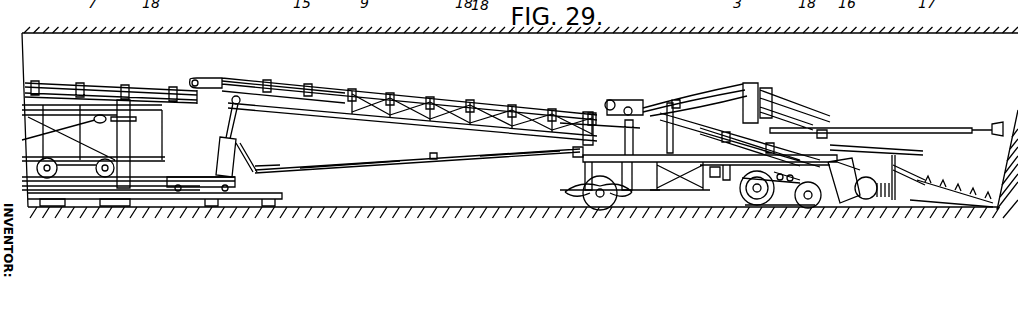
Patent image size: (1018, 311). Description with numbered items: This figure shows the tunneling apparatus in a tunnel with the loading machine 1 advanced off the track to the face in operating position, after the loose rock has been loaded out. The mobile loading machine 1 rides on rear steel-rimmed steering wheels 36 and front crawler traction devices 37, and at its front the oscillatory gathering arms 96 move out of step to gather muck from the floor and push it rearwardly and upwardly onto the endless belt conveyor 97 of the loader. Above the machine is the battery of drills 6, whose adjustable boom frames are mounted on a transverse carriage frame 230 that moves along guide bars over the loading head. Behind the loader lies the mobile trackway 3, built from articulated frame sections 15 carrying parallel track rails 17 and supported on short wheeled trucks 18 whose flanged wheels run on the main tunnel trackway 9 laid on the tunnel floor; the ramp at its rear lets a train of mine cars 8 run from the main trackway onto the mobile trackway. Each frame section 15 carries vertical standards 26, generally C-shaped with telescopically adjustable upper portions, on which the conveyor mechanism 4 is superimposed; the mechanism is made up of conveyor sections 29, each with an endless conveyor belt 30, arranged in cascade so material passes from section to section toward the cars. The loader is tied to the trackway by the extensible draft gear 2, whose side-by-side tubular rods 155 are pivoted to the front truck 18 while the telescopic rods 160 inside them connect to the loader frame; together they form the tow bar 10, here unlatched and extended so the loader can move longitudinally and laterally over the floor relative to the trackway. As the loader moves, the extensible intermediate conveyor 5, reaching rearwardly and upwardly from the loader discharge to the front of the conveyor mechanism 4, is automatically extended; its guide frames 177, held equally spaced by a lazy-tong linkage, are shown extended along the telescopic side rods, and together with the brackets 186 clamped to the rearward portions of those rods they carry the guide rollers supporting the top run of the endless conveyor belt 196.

The mobile loading machine 1 is at (850, 201).
The extensible draft gear 2 is at (401, 171).
The mobile trackway 3 is at (194, 173).
The conveyor mechanism 4 is at (152, 82).
The extensible intermediate conveyor 5 is at (530, 100).
The battery of drills 6 is at (813, 102).
The mine cars 8 is at (168, 128).
The main tunnel trackway 9 is at (282, 194).
The extensible tow bar 10 is at (372, 162).
The articulated frame sections 15 is at (90, 180).
The track rails 17 is at (107, 183).
The wheeled trucks 18 is at (193, 187).
The vertical standards 26 is at (128, 141).
The conveyor sections 29 is at (58, 83).
The endless conveyor belt 30 is at (100, 87).
The steering wheels 36 is at (600, 207).
The crawler traction devices 37 is at (748, 206).
The oscillatory gathering arms 96 is at (975, 190).
The endless belt conveyor 97 is at (625, 100).
The tubular rods 155 is at (318, 166).
The telescopic rods 160 is at (517, 157).
The guide frames 177 is at (457, 127).
The brackets 186 is at (345, 92).
The endless conveyor belt 196 is at (367, 88).
The carriage frame 230 is at (720, 92).